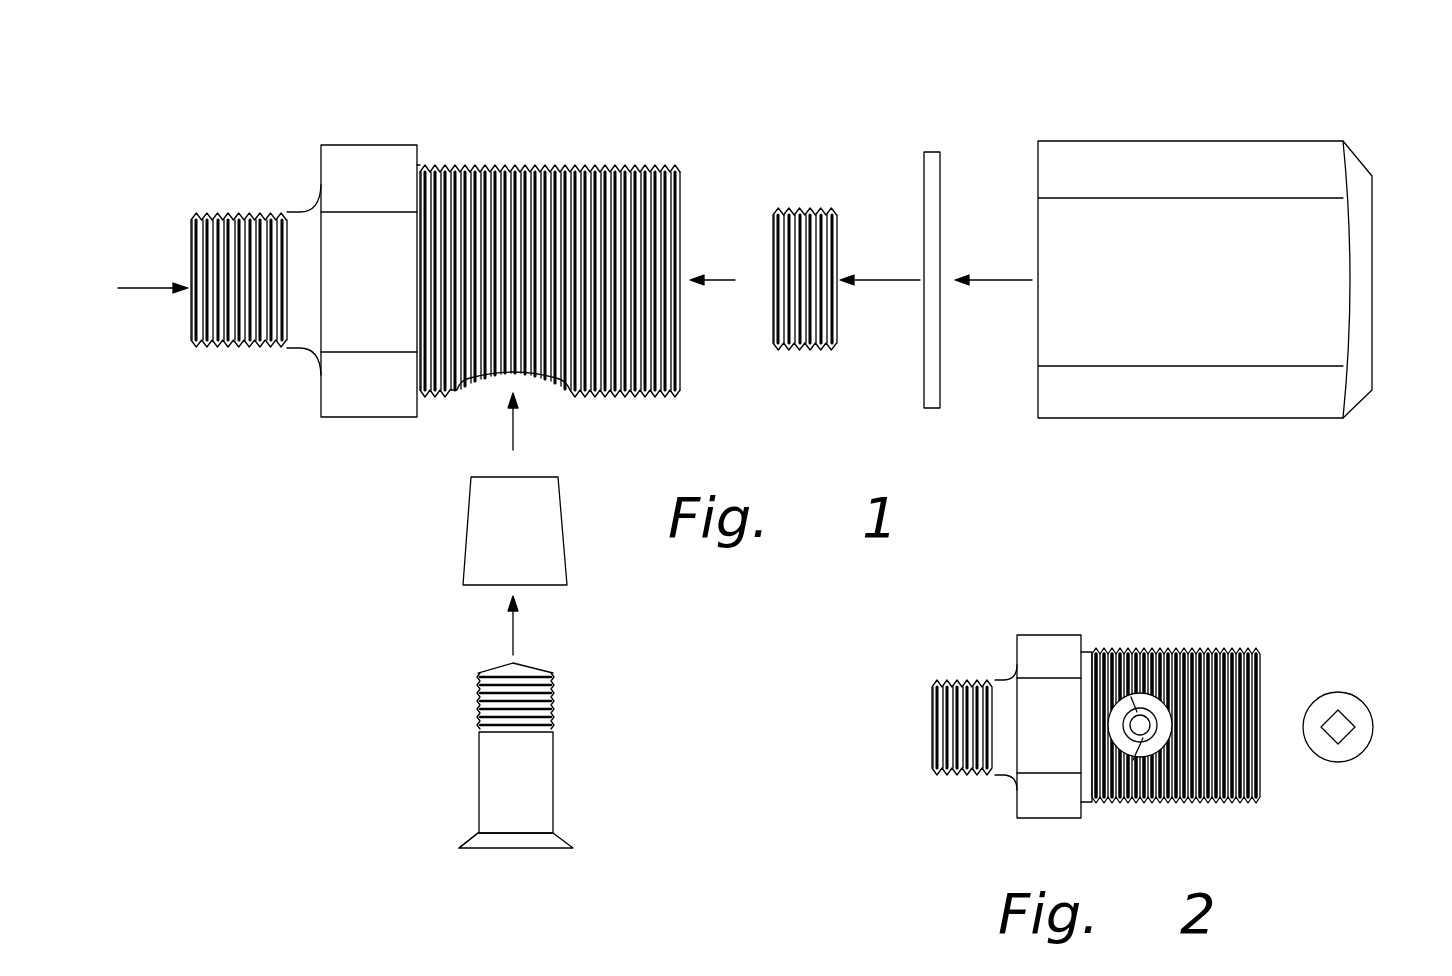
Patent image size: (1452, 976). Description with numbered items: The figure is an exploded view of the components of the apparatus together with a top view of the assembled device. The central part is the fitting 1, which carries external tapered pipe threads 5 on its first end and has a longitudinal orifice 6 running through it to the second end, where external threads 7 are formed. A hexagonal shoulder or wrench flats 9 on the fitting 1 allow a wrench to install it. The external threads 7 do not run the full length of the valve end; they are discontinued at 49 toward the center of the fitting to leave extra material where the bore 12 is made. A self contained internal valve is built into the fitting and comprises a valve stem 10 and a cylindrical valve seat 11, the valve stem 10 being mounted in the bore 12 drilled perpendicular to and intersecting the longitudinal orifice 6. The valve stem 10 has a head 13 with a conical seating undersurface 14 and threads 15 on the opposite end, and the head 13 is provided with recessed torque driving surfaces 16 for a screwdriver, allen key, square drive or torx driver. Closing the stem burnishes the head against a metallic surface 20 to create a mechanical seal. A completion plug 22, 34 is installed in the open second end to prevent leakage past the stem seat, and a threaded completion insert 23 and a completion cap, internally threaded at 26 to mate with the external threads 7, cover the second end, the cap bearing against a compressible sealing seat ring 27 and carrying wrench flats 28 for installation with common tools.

In FIG. 1, the fitting 1 is at (312, 188).
In FIG. 1, the external tapered pipe threads 5 is at (240, 353).
In FIG. 1, the longitudinal orifice 6 is at (152, 274).
In FIG. 1, the external threads 7 is at (525, 170).
In FIG. 1, the hexagonal shoulder or wrench flats 9 is at (378, 168).
In FIG. 2, the hexagonal shoulder or wrench flats 9 is at (1038, 650).
In FIG. 1, the valve stem 10 is at (525, 800).
In FIG. 1, the cylindrical valve seat 11 is at (485, 523).
In FIG. 2, the cylindrical valve seat 11 is at (1128, 800).
In FIG. 2, the bore 12 is at (1147, 650).
In FIG. 1, the head 13 is at (523, 852).
In FIG. 2, the head 13 is at (1325, 745).
In FIG. 1, the conical seating undersurface 14 is at (468, 833).
In FIG. 1, the threads 15 is at (552, 693).
In FIG. 2, the recessed torque driving surfaces 16 is at (1337, 720).
In FIG. 2, the metallic surface 20 is at (1092, 657).
In FIG. 1, the completion plug 22 is at (843, 317).
In FIG. 1, the threaded insert 23 is at (805, 279).
In FIG. 1, the internal threads of completion cap / soft mechanical sealing ring 26 is at (1361, 295).
In FIG. 1, the compressible sealing seat ring 27 is at (930, 178).
In FIG. 1, the wrench flats 28 is at (1139, 165).
In FIG. 1, the completion plug 34 is at (803, 279).
In FIG. 1, the thread discontinuation 49 is at (548, 281).
In FIG. 2, the thread discontinuation 49 is at (1220, 800).